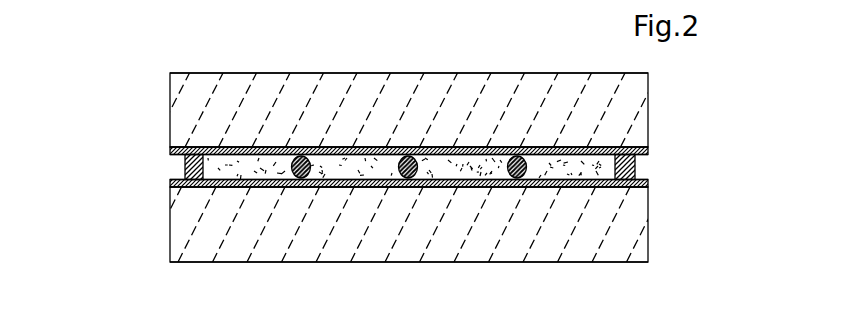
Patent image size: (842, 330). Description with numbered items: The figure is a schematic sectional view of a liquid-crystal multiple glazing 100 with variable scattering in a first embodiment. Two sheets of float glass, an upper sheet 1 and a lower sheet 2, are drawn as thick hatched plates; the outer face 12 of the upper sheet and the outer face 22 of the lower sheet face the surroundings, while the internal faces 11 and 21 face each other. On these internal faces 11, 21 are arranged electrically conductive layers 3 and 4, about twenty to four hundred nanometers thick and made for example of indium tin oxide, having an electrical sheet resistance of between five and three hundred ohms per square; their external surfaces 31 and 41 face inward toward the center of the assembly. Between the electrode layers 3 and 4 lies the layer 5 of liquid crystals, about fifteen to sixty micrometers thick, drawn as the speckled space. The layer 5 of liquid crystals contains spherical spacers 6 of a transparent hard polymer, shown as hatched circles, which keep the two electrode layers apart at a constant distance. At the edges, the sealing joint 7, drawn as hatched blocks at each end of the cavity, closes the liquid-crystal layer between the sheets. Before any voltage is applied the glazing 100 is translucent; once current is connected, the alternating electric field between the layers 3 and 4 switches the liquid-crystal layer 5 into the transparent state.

The liquid-crystal glazing 100 is at (132, 73).
The sheet of float glass 1 is at (196, 80).
The outer surface of first plate 12 is at (310, 73).
The internal face 11 is at (244, 153).
The second glass plate 2 is at (206, 250).
The outer surface of second plate 22 is at (375, 262).
The internal face 21 is at (445, 182).
The electrically conductive layer 3 is at (171, 151).
The external surface 31 is at (545, 187).
The electrically conductive layer 4 is at (171, 186).
The surface of bonding layer 41 is at (585, 147).
The layer of liquid crystals 5 is at (484, 147).
The spacers 6 is at (413, 147).
The sealing joint 7 is at (198, 162).